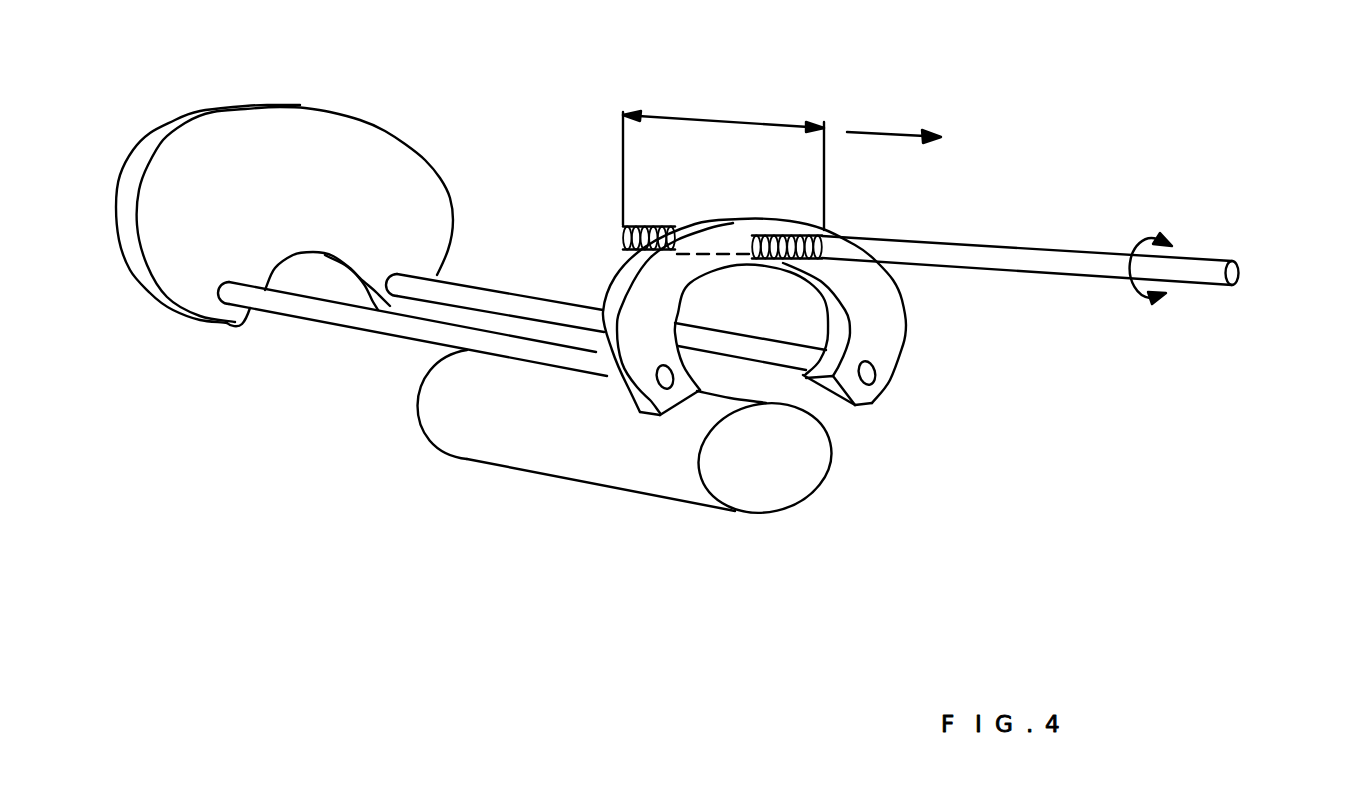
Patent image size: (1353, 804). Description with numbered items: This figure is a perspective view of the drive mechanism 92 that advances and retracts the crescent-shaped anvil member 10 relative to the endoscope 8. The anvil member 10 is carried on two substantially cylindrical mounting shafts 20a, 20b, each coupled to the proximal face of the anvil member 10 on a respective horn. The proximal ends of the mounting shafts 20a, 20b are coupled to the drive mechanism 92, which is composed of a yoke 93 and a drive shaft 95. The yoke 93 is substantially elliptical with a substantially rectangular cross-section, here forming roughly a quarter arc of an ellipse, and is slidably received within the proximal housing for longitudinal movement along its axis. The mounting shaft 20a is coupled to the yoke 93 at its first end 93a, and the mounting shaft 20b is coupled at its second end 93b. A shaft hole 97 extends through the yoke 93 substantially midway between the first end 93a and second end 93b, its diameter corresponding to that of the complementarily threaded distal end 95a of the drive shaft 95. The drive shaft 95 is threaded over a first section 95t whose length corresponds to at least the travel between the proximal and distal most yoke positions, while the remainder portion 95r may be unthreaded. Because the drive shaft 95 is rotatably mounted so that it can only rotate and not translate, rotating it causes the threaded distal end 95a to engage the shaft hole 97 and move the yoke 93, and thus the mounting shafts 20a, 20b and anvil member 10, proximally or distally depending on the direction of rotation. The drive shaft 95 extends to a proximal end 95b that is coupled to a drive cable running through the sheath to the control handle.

The anvil member 10 is at (348, 127).
The mounting shaft 20a is at (323, 318).
The mounting shaft 20b is at (545, 303).
The endoscope 8 is at (633, 465).
The drive mechanism 92 is at (1110, 357).
The yoke 93 is at (892, 327).
The first end of the yoke 93a is at (648, 412).
The second end of the yoke 93b is at (885, 390).
The drive shaft 95 is at (1028, 263).
The threaded distal end of the drive shaft 95a is at (622, 238).
The proximal end of the drive shaft 95b is at (1243, 267).
The first section 95t is at (723, 160).
The remainder portion 95r is at (894, 122).
The shaft hole 97 is at (718, 242).